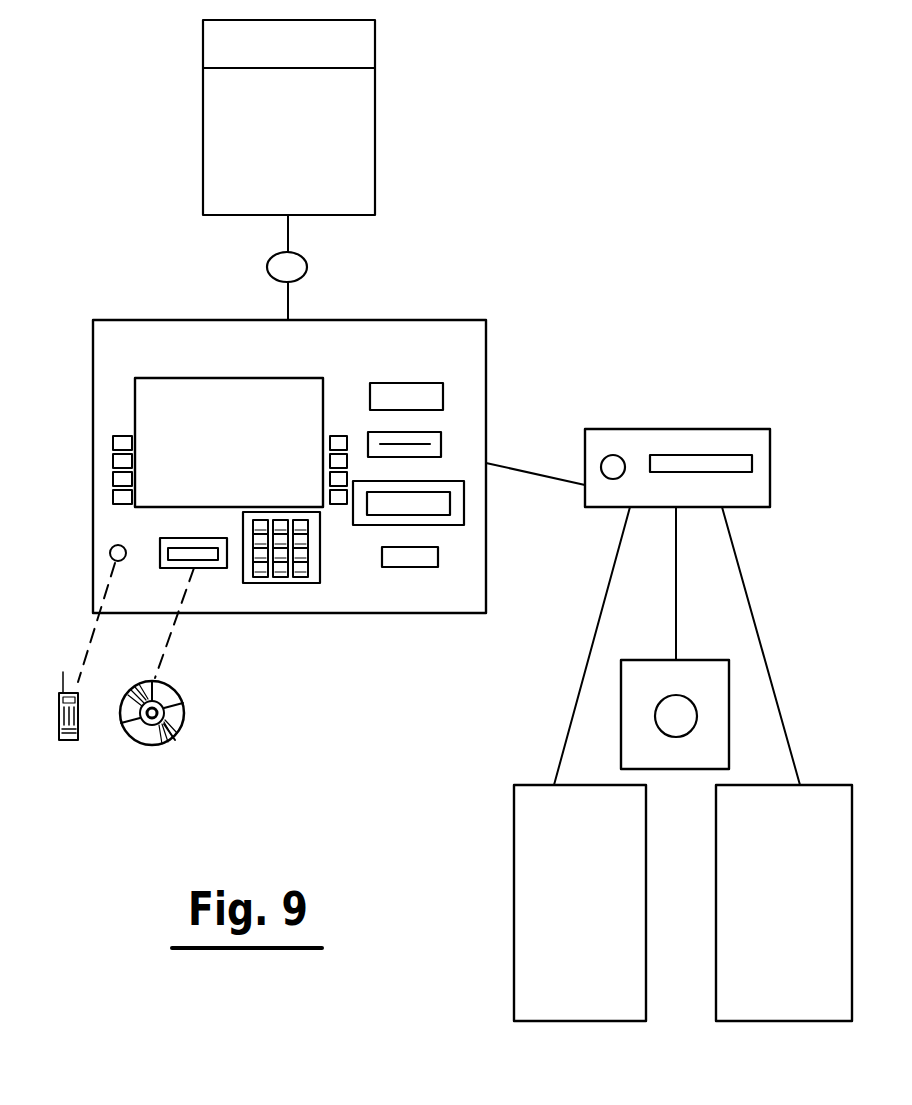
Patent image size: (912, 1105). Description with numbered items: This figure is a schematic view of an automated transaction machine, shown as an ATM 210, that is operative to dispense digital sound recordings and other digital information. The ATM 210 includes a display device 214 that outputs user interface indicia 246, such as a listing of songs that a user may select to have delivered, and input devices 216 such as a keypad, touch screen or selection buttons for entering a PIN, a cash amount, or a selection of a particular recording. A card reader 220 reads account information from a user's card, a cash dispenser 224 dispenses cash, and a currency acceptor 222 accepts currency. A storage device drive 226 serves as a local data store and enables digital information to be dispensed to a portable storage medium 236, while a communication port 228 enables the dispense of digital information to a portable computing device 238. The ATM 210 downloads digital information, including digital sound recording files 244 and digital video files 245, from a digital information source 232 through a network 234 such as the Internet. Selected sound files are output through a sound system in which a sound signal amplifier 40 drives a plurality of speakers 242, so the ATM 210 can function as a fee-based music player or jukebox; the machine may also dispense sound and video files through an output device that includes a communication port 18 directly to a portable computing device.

The communication port 18 is at (637, 680).
The stereo receiver 40 is at (714, 429).
The ATM 210 is at (440, 320).
The display device 214 is at (153, 378).
The input device 216 is at (113, 438).
The card reader 220 is at (441, 444).
The currency acceptor 222 is at (438, 563).
The cash dispenser 224 is at (464, 525).
The storage device drive 226 is at (197, 568).
The communication port 228 is at (108, 549).
The digital information source 232 is at (373, 55).
The network connection 234 is at (307, 268).
The portable storage medium 236 is at (184, 713).
The portable computing device 238 is at (77, 742).
The speakers 242 is at (684, 657).
The digital sound recording files 244 is at (352, 109).
The digital video files 245 is at (322, 152).
The user interface indicia 246 is at (253, 399).